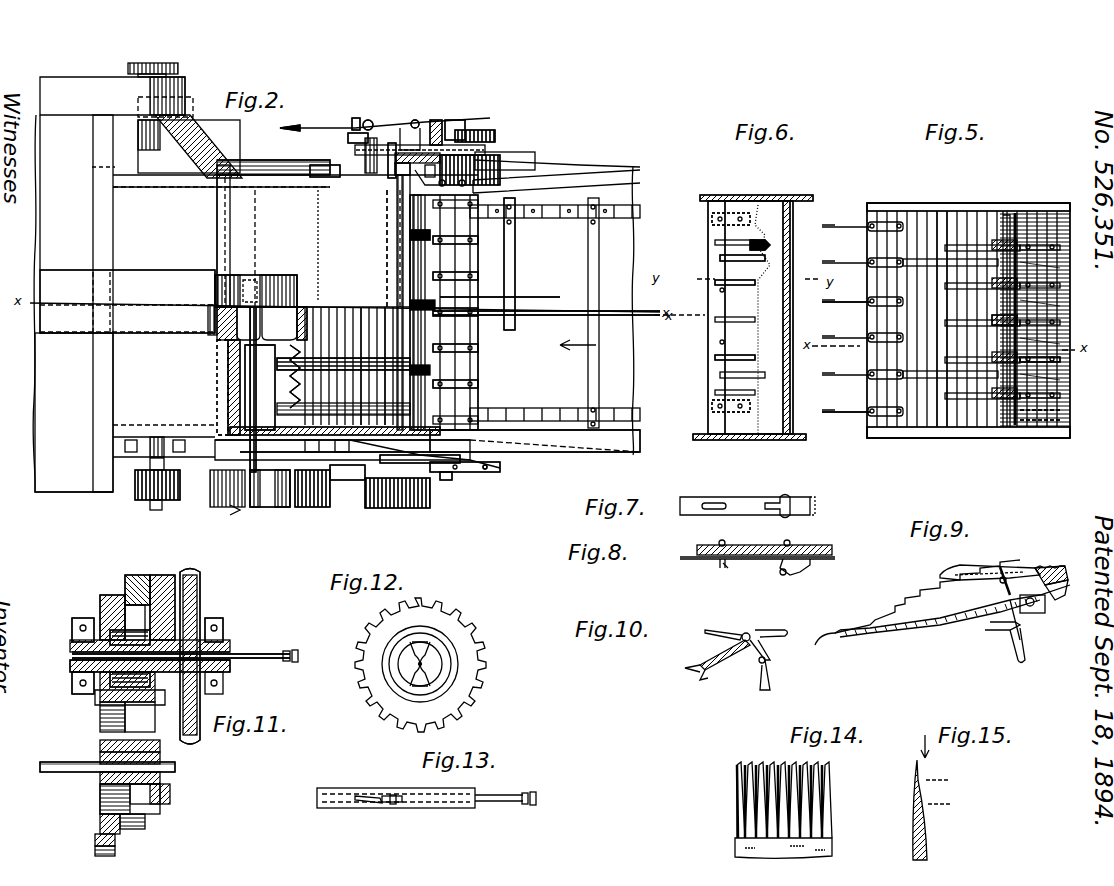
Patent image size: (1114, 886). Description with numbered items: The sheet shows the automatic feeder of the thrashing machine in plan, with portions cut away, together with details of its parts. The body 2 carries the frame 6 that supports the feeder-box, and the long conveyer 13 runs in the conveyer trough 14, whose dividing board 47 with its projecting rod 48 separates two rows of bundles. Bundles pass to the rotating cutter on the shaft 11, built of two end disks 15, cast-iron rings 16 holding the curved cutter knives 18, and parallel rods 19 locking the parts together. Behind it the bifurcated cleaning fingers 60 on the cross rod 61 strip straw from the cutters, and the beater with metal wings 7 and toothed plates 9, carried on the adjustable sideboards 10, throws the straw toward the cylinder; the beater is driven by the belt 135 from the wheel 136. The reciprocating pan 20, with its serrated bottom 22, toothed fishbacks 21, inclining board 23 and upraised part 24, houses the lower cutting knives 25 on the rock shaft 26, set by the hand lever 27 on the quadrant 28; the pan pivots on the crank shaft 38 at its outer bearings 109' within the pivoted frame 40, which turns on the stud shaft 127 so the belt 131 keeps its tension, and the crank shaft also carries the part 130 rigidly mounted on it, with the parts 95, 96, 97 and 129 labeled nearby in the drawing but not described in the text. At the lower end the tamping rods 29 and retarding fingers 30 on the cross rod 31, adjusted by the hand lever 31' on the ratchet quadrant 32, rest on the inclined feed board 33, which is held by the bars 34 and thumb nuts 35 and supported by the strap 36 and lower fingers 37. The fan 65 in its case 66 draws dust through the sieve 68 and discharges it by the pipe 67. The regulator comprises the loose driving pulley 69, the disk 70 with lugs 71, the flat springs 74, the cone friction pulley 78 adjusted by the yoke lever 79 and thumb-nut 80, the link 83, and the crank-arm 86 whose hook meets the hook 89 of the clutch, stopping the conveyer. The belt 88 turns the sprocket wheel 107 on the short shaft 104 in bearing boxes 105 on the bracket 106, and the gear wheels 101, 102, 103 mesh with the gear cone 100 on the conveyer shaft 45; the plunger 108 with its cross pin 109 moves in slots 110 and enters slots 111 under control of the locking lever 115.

In FIG. 2, the body of the thrashing machine 2 is at (74, 412).
In FIG. 2, the frame 6 is at (410, 176).
In FIG. 2, the metal wings 7 is at (326, 362).
In FIG. 2, the separable toothed metal plates 9 is at (300, 376).
In FIG. 2, the arms or sideboards 10 is at (236, 415).
In FIG. 2, the shaft 11 is at (345, 165).
In FIG. 2, the conveyer 13 is at (515, 262).
In FIG. 2, the conveyer trough 14 is at (535, 405).
In FIG. 2, the end disks 15 is at (430, 410).
In FIG. 2, the cast-iron rings 16 is at (370, 310).
In FIG. 2, the curved cutter knives 18 is at (470, 285).
In FIG. 2, the parallel rods 19 is at (350, 320).
In FIG. 2, the reciprocating pan 20 is at (465, 372).
In FIG. 5, the reciprocating pan 20 is at (950, 220).
In FIG. 5, the toothed fishbacks or vertical plates 21 is at (903, 205).
In FIG. 9, the toothed fishbacks or vertical plates 21 is at (910, 605).
In FIG. 5, the serrated bottom 22 is at (937, 319).
In FIG. 9, the serrated bottom 22 is at (975, 612).
In FIG. 5, the inclining board 23 is at (1015, 342).
In FIG. 9, the inclining board 23 is at (1068, 588).
In FIG. 5, the upraised part of the floor 24 is at (1050, 378).
In FIG. 9, the upraised part of the floor 24 is at (1060, 566).
In FIG. 2, the lower cutting knives 25 is at (468, 348).
In FIG. 5, the lower cutting knives 25 is at (980, 400).
In FIG. 9, the lower cutting knives 25 is at (972, 565).
In FIG. 5, the rock shaft 26 is at (1040, 415).
In FIG. 9, the rock shaft 26 is at (1020, 572).
In FIG. 9, the hand lever 27 is at (1023, 655).
In FIG. 9, the quadrant 28 is at (990, 628).
In FIG. 5, the downwardly curved teeth or tamping rods 29 is at (845, 303).
In FIG. 9, the downwardly curved teeth or tamping rods 29 is at (830, 635).
In FIG. 6, the retarding fingers 30 is at (718, 283).
In FIG. 10, the retarding fingers 30 is at (715, 630).
In FIG. 2, the cross rod 31 is at (453, 247).
In FIG. 6, the cross rod 31 is at (746, 254).
In FIG. 10, the cross rod 31 is at (759, 623).
In FIG. 10, the hand lever 31' is at (781, 676).
In FIG. 6, the ratchet quadrant 32 is at (780, 258).
In FIG. 10, the ratchet quadrant 32 is at (770, 645).
In FIG. 6, the inclined feed board 33 is at (750, 317).
In FIG. 8, the inclined feed board 33 is at (700, 546).
In FIG. 10, the inclined feed board 33 is at (715, 660).
In FIG. 6, the bars 34 is at (785, 196).
In FIG. 7, the bars 34 is at (755, 508).
In FIG. 8, the bars 34 is at (712, 559).
In FIG. 8, the thumb nuts 35 is at (783, 570).
In FIG. 6, the plate or strap 36 is at (715, 398).
In FIG. 10, the plate or strap 36 is at (685, 668).
In FIG. 6, the lower fingers 37 is at (712, 219).
In FIG. 10, the lower fingers 37 is at (706, 678).
In FIG. 2, the crank shaft 38 is at (458, 475).
In FIG. 2, the pivoted frame 40 is at (323, 165).
In FIG. 11, the upper shaft of the conveyer 45 is at (175, 767).
In FIG. 2, the dividing board 47 is at (540, 312).
In FIG. 2, the projecting rod 48 is at (505, 300).
In FIG. 2, the bifurcated cleaning fingers 60 is at (258, 400).
In FIG. 2, the cross rod 61 is at (233, 375).
In FIG. 2, the revolving fan 65 is at (293, 310).
In FIG. 2, the fan case 66 is at (280, 270).
In FIG. 2, the pipe 67 is at (127, 301).
In FIG. 2, the wire sieve 68 is at (230, 352).
In FIG. 2, the driving pulley 69 is at (400, 508).
In FIG. 2, the second disk or pulley 70 is at (442, 473).
In FIG. 2, the lugs 71 is at (390, 508).
In FIG. 2, the flat springs or bars 74 is at (375, 470).
In FIG. 2, the cone friction pulley 78 is at (310, 507).
In FIG. 2, the yoke lever 79 is at (335, 446).
In FIG. 2, the thumb-nut 80 is at (310, 460).
In FIG. 2, the link 83 is at (350, 480).
In FIG. 2, the second crank-arm 86 is at (392, 143).
In FIG. 2, the belt 88 is at (478, 148).
In FIG. 2, the hook 89 is at (374, 120).
In FIG. 2, the block 95 is at (348, 137).
In FIG. 2, the stud 96 is at (362, 113).
In FIG. 2, the cross bar 97 is at (470, 240).
In FIG. 2, the gear cone 100 is at (505, 168).
In FIG. 11, the gear cone 100 is at (160, 808).
In FIG. 11, the gear wheel 101 is at (115, 615).
In FIG. 11, the gear wheel 102 is at (138, 585).
In FIG. 11, the gear wheel 103 is at (165, 575).
In FIG. 11, the short shaft 104 is at (238, 672).
In FIG. 13, the short shaft 104 is at (350, 790).
In FIG. 11, the bearing boxes 105 is at (72, 625).
In FIG. 2, the bracket 106 is at (440, 125).
In FIG. 11, the sprocket wheel 107 is at (197, 580).
In FIG. 2, the plunger 108 is at (465, 128).
In FIG. 11, the plunger 108 is at (258, 662).
In FIG. 13, the plunger 108 is at (495, 802).
In FIG. 11, the cross pin 109 is at (101, 696).
In FIG. 13, the cross pin 109 is at (405, 810).
In FIG. 9, the outer bearings 109' is at (1055, 611).
In FIG. 11, the slots 110 is at (85, 680).
In FIG. 13, the slots 110 is at (365, 800).
In FIG. 11, the slots 111 is at (165, 635).
In FIG. 12, the slots 111 is at (402, 648).
In FIG. 2, the adjustable and locking lever 115 is at (417, 120).
In FIG. 2, the stud shaft 127 is at (245, 507).
In FIG. 2, the gear 129 is at (270, 505).
In FIG. 2, the stud 130 is at (490, 468).
In FIG. 2, the belt 131 is at (480, 470).
In FIG. 2, the belt 135 is at (310, 130).
In FIG. 2, the wheel 136 is at (390, 176).